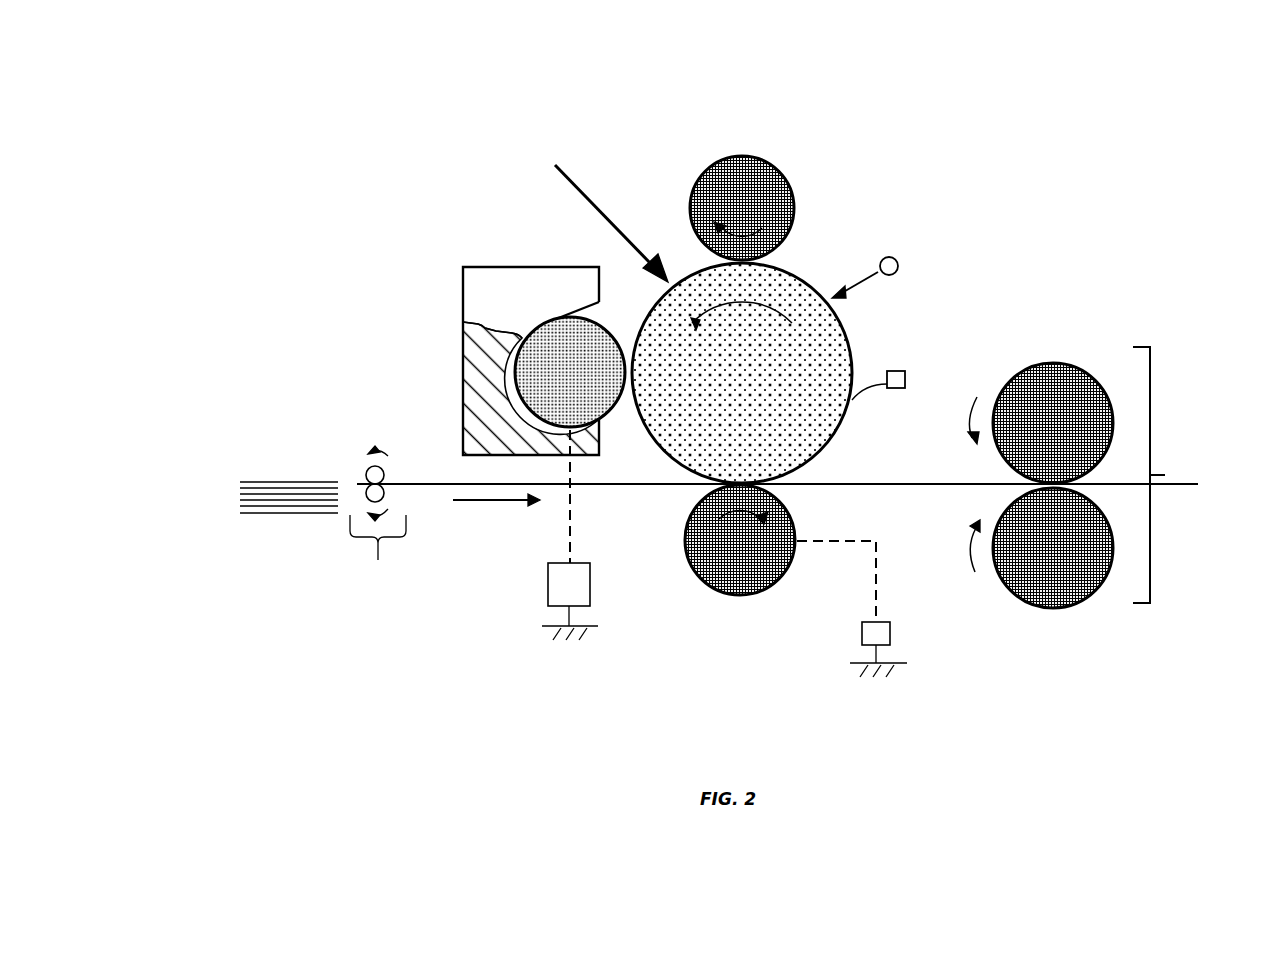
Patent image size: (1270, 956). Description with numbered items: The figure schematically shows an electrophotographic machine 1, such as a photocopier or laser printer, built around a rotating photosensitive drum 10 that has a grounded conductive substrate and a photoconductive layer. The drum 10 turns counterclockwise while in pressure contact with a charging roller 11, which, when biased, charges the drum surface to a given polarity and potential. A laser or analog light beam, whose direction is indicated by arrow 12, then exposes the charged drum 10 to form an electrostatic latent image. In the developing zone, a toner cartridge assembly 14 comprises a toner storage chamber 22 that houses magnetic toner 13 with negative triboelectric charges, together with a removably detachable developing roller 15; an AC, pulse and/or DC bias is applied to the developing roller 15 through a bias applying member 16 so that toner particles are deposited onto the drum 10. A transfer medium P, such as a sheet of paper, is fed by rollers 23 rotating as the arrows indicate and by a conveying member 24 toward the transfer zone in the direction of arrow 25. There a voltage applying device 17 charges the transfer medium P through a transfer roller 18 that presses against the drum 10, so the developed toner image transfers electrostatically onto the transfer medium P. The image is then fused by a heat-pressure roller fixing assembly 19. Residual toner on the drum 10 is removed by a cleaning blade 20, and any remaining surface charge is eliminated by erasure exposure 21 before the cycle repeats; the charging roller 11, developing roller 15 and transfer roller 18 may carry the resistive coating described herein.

The electrophotographic machine 1 is at (348, 140).
The photosensitive drum 10 is at (752, 384).
The charging roller 11 is at (760, 153).
The light beam direction arrow 12 is at (590, 201).
The toner 13 is at (480, 418).
The toner cartridge assembly 14 is at (452, 289).
The developing roller 15 is at (580, 382).
The bias applying member 16 is at (548, 595).
The voltage applying device 17 is at (862, 632).
The transfer roller 18 is at (710, 592).
The heat-pressure roller fixing assembly 19 is at (1169, 450).
The cleaning blade 20 is at (906, 380).
The erasure exposure 21 is at (899, 266).
The toner storage chamber 22 is at (462, 360).
The rollers 23 is at (369, 579).
The conveying member 24 is at (624, 487).
The transfer direction arrow 25 is at (495, 502).
The transfer medium P is at (277, 457).